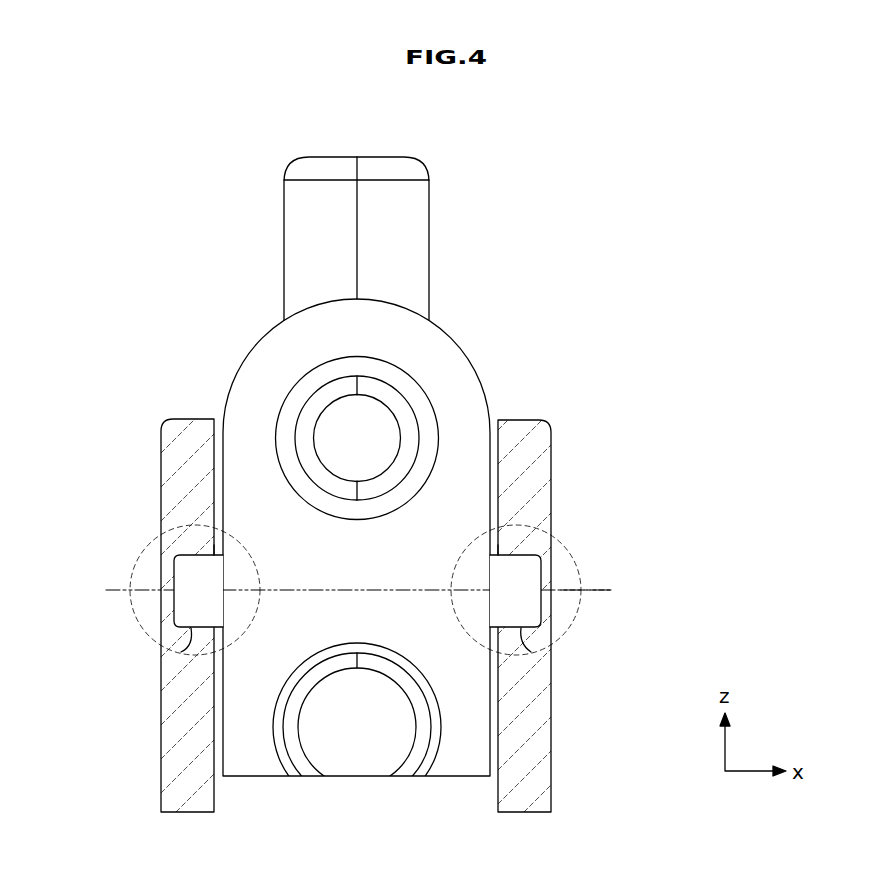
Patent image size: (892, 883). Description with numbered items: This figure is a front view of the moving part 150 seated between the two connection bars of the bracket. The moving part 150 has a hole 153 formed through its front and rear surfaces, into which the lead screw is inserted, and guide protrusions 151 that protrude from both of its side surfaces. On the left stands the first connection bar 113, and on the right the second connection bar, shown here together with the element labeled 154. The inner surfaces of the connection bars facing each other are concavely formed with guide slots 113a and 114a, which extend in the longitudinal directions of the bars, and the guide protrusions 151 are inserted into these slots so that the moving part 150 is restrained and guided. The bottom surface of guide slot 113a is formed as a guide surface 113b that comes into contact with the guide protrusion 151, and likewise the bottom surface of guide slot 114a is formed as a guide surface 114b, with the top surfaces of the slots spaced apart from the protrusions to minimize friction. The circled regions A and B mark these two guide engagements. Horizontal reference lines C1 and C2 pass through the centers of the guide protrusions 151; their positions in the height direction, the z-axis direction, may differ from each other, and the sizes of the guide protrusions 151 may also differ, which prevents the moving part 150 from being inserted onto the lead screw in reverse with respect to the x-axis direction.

The moving part 150 is at (200, 225).
The hole 153 is at (402, 413).
The second side plate 154 is at (550, 421).
The first connection bar 113 is at (159, 442).
The guide slot 113a is at (174, 580).
The guide surface 113b is at (186, 650).
The guide protrusions 151 is at (187, 612).
The guide slot 114a is at (540, 572).
The guide surface 114b is at (515, 630).
The detail region A is at (155, 541).
The detail region B is at (577, 562).
The horizontal reference line C1 is at (604, 590).
The horizontal reference line C2 is at (603, 592).